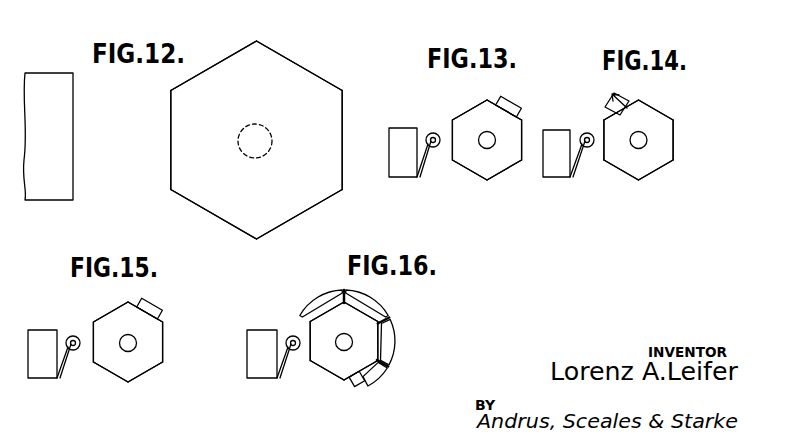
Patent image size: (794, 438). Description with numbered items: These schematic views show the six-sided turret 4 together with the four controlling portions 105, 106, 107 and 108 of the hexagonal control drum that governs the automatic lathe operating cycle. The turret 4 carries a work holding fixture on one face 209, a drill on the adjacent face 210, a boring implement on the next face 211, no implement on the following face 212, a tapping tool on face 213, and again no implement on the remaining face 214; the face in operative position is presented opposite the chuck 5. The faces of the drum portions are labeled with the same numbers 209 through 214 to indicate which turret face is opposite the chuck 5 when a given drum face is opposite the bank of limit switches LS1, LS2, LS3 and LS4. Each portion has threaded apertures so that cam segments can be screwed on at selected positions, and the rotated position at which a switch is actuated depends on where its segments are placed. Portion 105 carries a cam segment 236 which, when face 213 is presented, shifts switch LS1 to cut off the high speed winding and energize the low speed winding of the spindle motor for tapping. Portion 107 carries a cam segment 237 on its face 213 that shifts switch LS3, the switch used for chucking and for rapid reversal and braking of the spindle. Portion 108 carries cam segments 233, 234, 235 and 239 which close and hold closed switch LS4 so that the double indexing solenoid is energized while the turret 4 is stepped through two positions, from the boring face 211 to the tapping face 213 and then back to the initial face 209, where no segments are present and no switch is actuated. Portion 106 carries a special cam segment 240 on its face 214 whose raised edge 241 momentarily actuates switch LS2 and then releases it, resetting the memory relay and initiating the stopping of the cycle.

In FIG. 12, the turret 4 is at (197, 206).
In FIG. 12, the chuck 5 is at (66, 200).
In FIG. 13, the controlling portion 105 is at (488, 172).
In FIG. 14, the controlling portion 106 is at (639, 175).
In FIG. 15, the controlling portion 107 is at (137, 372).
In FIG. 16, the controlling portion 108 is at (338, 368).
In FIG. 12, the face 209 is at (171, 99).
In FIG. 13, the face 209 is at (452, 128).
In FIG. 14, the face 209 is at (603, 152).
In FIG. 15, the face 209 is at (93, 356).
In FIG. 16, the face 209 is at (309, 359).
In FIG. 12, the face 210 is at (240, 230).
In FIG. 13, the face 210 is at (462, 165).
In FIG. 14, the face 210 is at (622, 171).
In FIG. 15, the face 210 is at (116, 375).
In FIG. 16, the face 210 is at (319, 367).
In FIG. 12, the face 211 is at (330, 196).
In FIG. 13, the face 211 is at (508, 168).
In FIG. 14, the face 211 is at (669, 163).
In FIG. 15, the face 211 is at (157, 365).
In FIG. 16, the face 211 is at (362, 383).
In FIG. 12, the face 212 is at (343, 100).
In FIG. 13, the face 212 is at (522, 130).
In FIG. 14, the face 212 is at (674, 123).
In FIG. 15, the face 212 is at (164, 332).
In FIG. 16, the face 212 is at (382, 330).
In FIG. 12, the face 213 is at (324, 79).
In FIG. 13, the face 213 is at (519, 104).
In FIG. 14, the face 213 is at (665, 114).
In FIG. 15, the face 213 is at (161, 314).
In FIG. 16, the face 213 is at (378, 312).
In FIG. 12, the face 214 is at (241, 49).
In FIG. 13, the face 214 is at (485, 100).
In FIG. 14, the face 214 is at (634, 100).
In FIG. 15, the face 214 is at (117, 308).
In FIG. 16, the face 214 is at (338, 303).
In FIG. 16, the cam segment 233 is at (383, 373).
In FIG. 16, the cam segment 234 is at (397, 347).
In FIG. 16, the cam segment 235 is at (357, 292).
In FIG. 13, the cam segment 236 is at (509, 88).
In FIG. 15, the cam segment 237 is at (153, 300).
In FIG. 16, the cam segment 239 is at (318, 298).
In FIG. 14, the special cam segment 240 is at (610, 99).
In FIG. 14, the raised edge 241 is at (630, 112).
In FIG. 13, the limit switch LS1 is at (407, 128).
In FIG. 14, the limit switch LS2 is at (567, 130).
In FIG. 15, the limit switch LS3 is at (50, 330).
In FIG. 16, the limit switch LS4 is at (265, 330).